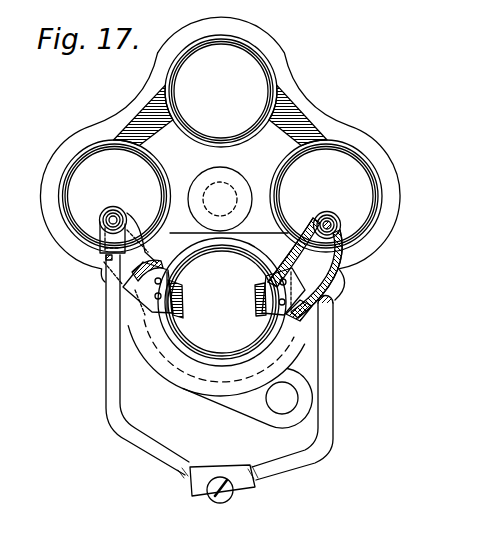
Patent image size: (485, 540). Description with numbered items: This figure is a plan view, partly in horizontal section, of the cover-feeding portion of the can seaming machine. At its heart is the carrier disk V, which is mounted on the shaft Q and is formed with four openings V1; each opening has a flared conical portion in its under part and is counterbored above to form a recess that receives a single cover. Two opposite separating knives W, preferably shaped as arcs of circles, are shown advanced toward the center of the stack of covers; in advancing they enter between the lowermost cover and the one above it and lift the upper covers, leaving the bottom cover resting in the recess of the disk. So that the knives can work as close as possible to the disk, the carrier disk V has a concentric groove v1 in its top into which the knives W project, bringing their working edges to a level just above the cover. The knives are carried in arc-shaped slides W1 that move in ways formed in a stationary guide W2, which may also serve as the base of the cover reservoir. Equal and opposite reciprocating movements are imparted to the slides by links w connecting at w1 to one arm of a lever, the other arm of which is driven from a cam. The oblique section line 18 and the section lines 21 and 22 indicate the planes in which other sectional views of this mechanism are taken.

The carrier disk V is at (66, 148).
The openings of the carrier disk V1 is at (221, 143).
The concentric groove v1 is at (138, 116).
The shaft Q is at (206, 191).
The separating knives W is at (183, 302).
The arc-shaped slides W1 is at (314, 262).
The stationary guide W2 is at (306, 314).
The links w is at (108, 373).
The connection of links to lever w1 is at (215, 497).
The section line 18- 18 is at (372, 355).
The section line 21- 21 is at (93, 297).
The section line 22- 22 is at (100, 88).